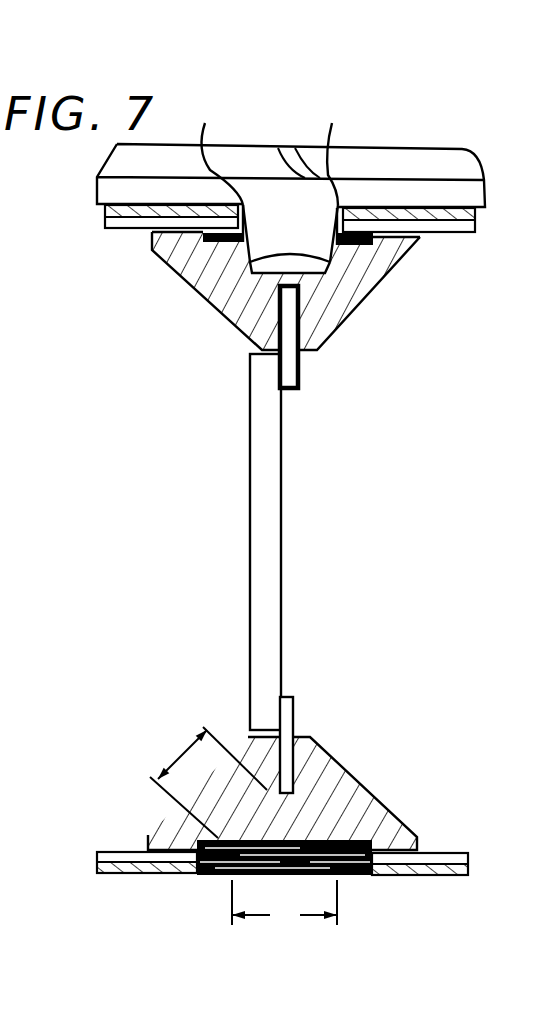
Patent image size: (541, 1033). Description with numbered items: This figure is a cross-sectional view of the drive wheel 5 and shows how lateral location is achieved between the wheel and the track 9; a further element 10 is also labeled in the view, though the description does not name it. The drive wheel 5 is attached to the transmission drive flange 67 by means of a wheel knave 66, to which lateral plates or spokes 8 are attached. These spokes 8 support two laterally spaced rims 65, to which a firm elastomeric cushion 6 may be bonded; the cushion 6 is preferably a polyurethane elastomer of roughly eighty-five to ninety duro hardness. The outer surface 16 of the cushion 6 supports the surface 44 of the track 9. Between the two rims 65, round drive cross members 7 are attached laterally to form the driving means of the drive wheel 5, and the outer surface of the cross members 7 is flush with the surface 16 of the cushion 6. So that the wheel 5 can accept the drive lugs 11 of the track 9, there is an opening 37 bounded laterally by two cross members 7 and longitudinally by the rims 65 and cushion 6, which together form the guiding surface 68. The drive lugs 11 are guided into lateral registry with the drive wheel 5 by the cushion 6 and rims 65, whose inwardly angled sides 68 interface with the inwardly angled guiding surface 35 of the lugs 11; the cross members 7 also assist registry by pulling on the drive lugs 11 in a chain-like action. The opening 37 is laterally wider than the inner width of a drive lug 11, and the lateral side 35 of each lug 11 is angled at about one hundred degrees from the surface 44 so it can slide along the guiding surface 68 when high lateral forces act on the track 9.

The drive wheel 5 is at (395, 572).
The elastomeric cushion 6 is at (97, 863).
The drive cross member 7 is at (281, 880).
The spoke 8 is at (363, 277).
The track 9 is at (115, 185).
The upper plate 10 is at (400, 162).
The drive lug 11 is at (283, 233).
The cushion surface 16 is at (153, 874).
The guiding surface of lug 35 is at (250, 257).
The opening 37 is at (279, 918).
The track surface 44 is at (105, 212).
The rim 65 is at (123, 852).
The wheel knave 66 is at (290, 367).
The transmission drive flange 67 is at (268, 507).
The guiding surface 68 is at (292, 153).